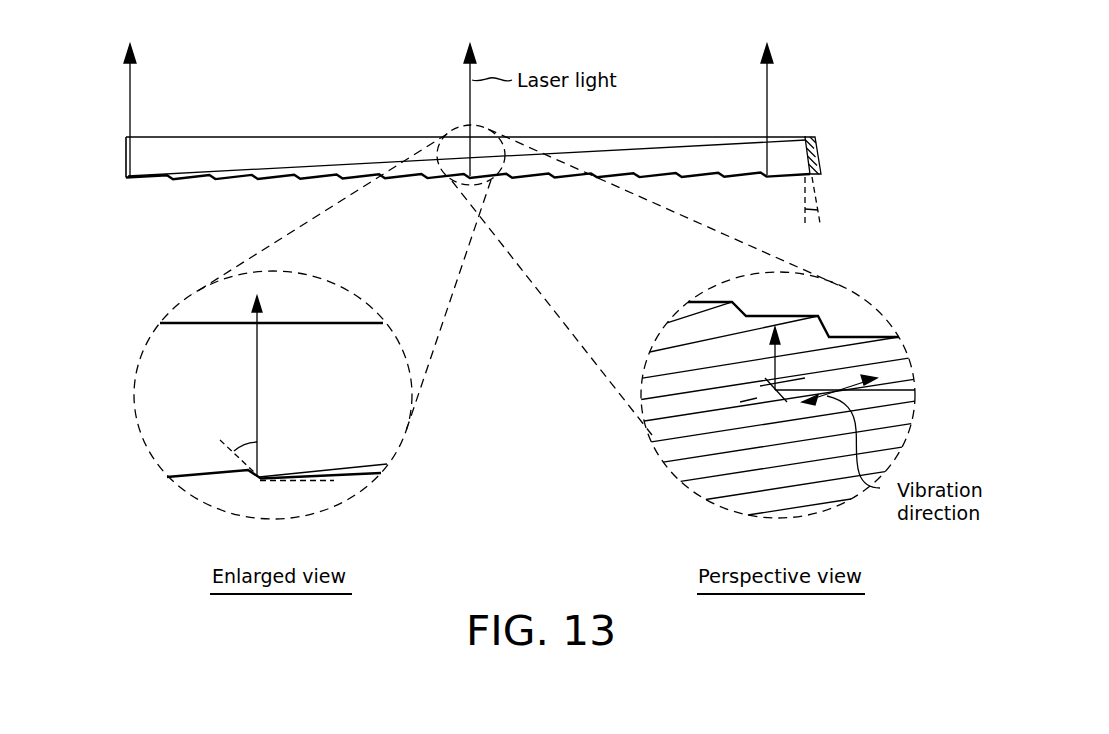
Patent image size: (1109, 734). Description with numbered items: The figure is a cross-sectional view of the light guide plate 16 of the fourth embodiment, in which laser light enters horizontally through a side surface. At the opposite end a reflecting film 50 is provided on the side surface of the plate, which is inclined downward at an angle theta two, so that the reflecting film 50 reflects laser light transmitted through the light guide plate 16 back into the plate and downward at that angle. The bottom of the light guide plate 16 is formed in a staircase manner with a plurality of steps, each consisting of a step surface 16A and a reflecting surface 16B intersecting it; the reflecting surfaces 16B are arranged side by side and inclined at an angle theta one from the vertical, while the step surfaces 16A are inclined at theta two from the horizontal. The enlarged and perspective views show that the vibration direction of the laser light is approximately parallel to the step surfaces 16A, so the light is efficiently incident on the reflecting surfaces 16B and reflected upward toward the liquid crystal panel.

The light guide plate 16 is at (130, 157).
The reflecting film 50 is at (817, 152).
The step surface 16A is at (365, 476).
The reflecting surface 16B is at (261, 482).